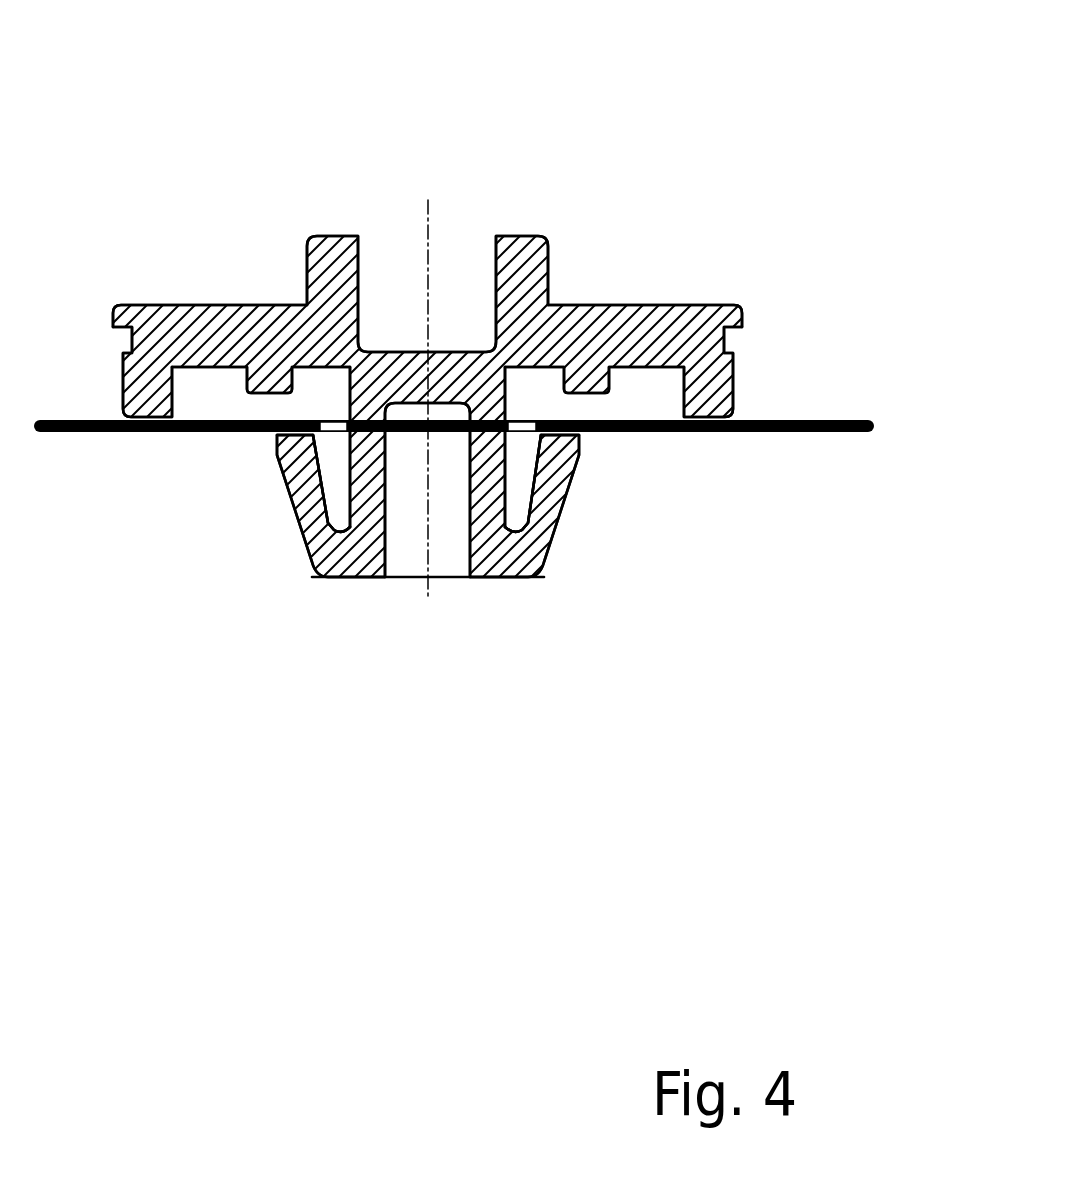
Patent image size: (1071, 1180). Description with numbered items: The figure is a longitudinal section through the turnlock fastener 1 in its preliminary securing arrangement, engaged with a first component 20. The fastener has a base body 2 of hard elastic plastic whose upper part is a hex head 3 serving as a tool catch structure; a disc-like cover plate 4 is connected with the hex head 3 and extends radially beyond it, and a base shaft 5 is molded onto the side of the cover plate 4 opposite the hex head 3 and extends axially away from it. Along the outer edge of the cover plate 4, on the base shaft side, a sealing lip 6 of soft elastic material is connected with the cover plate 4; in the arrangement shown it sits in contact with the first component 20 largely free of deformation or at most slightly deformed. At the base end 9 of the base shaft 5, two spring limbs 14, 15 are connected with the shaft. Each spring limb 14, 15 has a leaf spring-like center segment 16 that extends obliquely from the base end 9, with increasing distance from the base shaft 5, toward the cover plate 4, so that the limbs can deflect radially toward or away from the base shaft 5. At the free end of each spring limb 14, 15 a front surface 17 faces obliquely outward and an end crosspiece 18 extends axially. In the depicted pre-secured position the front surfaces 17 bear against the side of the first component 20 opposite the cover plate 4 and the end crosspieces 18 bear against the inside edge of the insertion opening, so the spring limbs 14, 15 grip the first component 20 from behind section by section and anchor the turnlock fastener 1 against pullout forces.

The turnlock fastener 1 is at (378, 210).
The base body 2 is at (409, 503).
The hex head 3 is at (513, 250).
The cover plate 4 is at (574, 345).
The base shaft 5 is at (395, 505).
The sealing lip 6 is at (125, 383).
The base end 9 is at (462, 592).
The first spring limb 14 is at (300, 515).
The second spring limb 15 is at (564, 488).
The center segment 16 is at (298, 500).
The front surface 17 is at (280, 439).
The end crosspiece 18 is at (308, 420).
The first component 20 is at (748, 434).